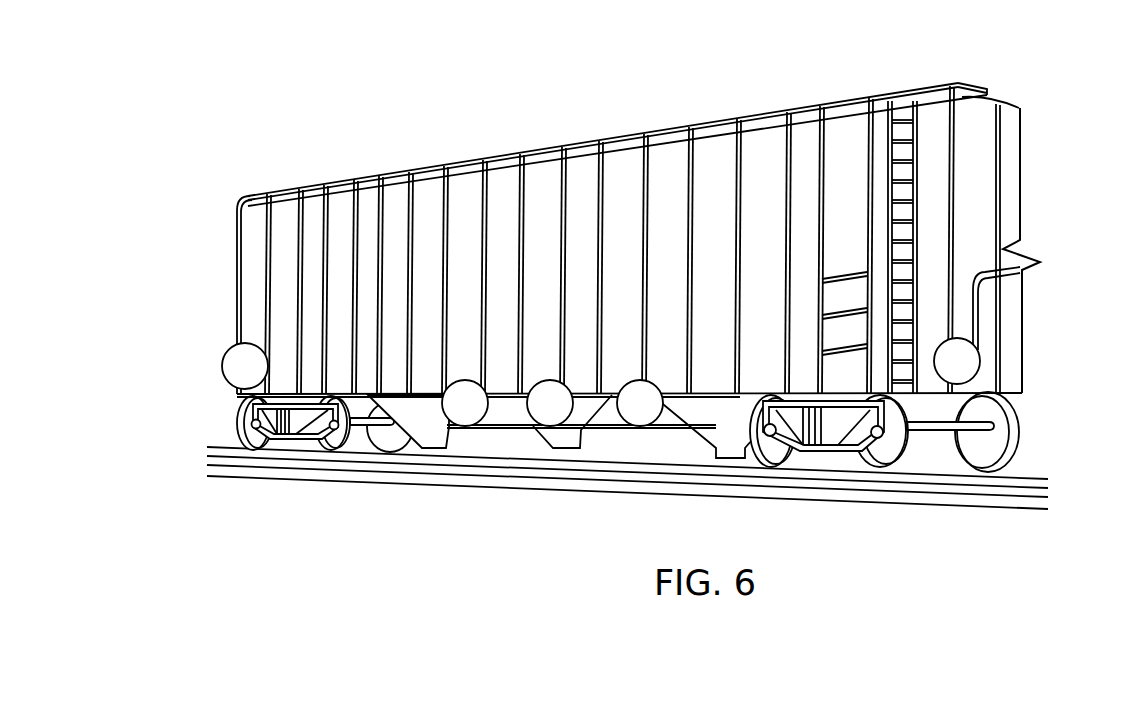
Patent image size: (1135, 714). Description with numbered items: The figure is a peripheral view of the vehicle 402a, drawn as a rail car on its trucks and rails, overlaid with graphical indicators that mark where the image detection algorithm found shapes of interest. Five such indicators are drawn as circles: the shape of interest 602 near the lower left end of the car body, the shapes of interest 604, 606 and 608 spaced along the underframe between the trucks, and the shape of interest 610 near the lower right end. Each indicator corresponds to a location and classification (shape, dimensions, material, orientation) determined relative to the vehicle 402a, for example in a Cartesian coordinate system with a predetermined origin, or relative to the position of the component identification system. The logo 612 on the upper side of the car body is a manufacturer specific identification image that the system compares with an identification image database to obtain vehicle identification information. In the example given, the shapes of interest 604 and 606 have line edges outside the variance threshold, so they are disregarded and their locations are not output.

The vehicle 402a is at (1018, 75).
The shape of interest 602 is at (238, 371).
The shape of interest 604 is at (467, 414).
The shape of interest 606 is at (552, 414).
The shape of interest 608 is at (641, 414).
The shape of interest 610 is at (968, 363).
The logo 612 is at (706, 158).